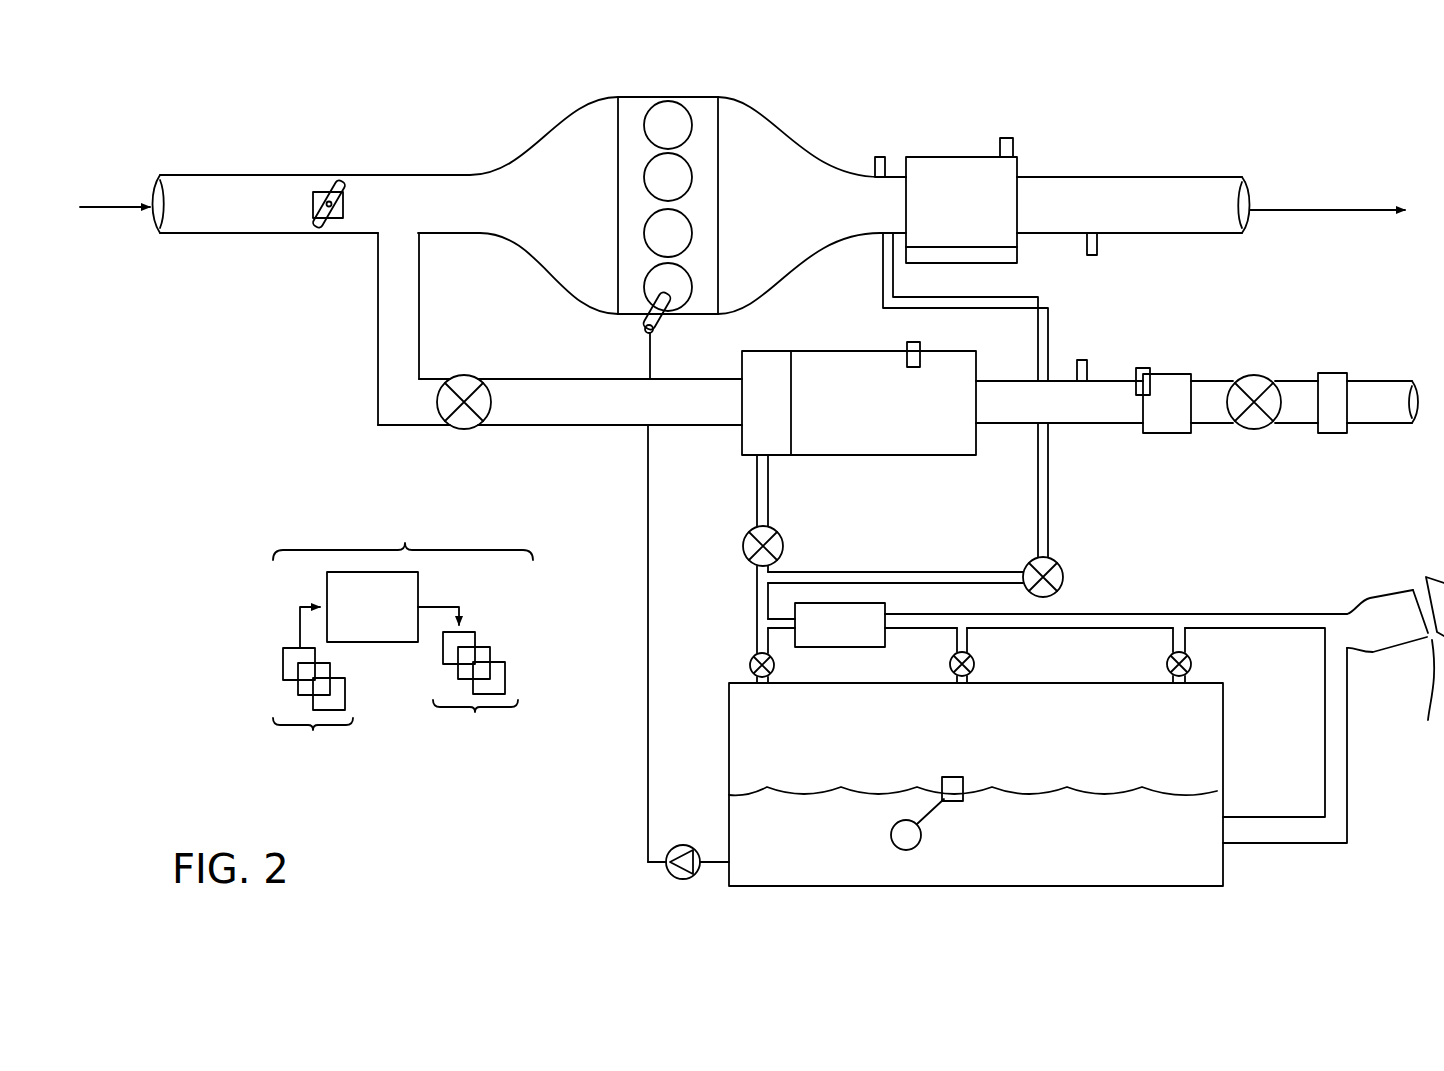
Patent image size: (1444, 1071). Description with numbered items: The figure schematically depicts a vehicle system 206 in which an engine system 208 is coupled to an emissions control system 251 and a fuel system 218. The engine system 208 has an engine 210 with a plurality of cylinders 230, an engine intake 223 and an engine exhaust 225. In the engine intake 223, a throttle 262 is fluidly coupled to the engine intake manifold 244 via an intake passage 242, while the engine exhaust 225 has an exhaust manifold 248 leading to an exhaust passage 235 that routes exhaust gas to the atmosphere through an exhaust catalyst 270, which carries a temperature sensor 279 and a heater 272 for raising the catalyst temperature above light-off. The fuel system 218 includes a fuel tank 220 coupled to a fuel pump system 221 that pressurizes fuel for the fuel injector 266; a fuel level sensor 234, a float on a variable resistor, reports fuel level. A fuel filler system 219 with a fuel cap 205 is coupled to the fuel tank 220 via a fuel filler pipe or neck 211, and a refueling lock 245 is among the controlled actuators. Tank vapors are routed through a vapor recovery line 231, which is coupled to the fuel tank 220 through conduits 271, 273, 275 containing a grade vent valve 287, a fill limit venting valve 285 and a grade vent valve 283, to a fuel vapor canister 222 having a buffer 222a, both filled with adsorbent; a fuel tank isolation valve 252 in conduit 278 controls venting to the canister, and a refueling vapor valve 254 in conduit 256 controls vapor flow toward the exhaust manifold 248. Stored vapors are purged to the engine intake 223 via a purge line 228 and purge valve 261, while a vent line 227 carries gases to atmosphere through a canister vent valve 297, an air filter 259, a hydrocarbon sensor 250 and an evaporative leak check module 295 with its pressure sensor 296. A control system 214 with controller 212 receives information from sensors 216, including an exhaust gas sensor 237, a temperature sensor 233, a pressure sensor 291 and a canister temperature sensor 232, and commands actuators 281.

The fuel cap 205 is at (1443, 580).
The vehicle system 206 is at (178, 100).
The engine system 208 is at (1028, 97).
The engine 210 is at (718, 192).
The fuel filler pipe or neck 211 is at (1350, 730).
The controller 212 is at (379, 610).
The control system 214 is at (403, 528).
The sensors 216 is at (313, 711).
The fuel system 218 is at (1365, 805).
The fuel filler system 219 is at (1400, 572).
The fuel tank 220 is at (1225, 793).
The fuel pump system 221 is at (688, 848).
The fuel vapor canister 222 is at (975, 371).
The buffer 222a is at (768, 351).
The engine intake 223 is at (383, 107).
The engine exhaust 225 is at (907, 82).
The vent line 227 is at (1197, 402).
The purge line 228 is at (560, 620).
The cylinders 230 is at (688, 118).
The vapor recovery line 231 is at (1243, 613).
The canister temperature sensor 232 is at (912, 342).
The temperature sensor 233 is at (1085, 248).
The fuel level sensor 234 is at (955, 777).
The exhaust passage 235 is at (1195, 177).
The exhaust gas sensor 237 is at (878, 166).
The intake passage 242 is at (378, 237).
The engine intake manifold 244 is at (580, 205).
The refueling lock 245 is at (1428, 720).
The exhaust manifold 248 is at (812, 205).
The hydrocarbon sensor 250 is at (1082, 360).
The emissions control system 251 is at (1398, 330).
The fuel tank isolation valve 252 is at (750, 560).
The refueling vapor valve 254 is at (1028, 566).
The conduit 256 is at (935, 572).
The air filter 259 is at (1340, 373).
The purge valve 261 is at (470, 380).
The throttle 262 is at (343, 220).
The fuel injector 266 is at (660, 312).
The exhaust catalyst 270 is at (945, 157).
The conduit 271 is at (772, 645).
The heater 272 is at (965, 263).
The conduit 273 is at (957, 640).
The conduit 275 is at (1172, 640).
The conduit 278 is at (753, 490).
The temperature sensor 279 is at (1012, 140).
The actuators 281 is at (478, 694).
The grade vent valve 283 is at (1192, 665).
The fill limit venting valve 285 is at (975, 666).
The grade vent valve 287 is at (745, 660).
The pressure sensor 291 is at (888, 618).
The evaporative leak check module 295 is at (1166, 374).
The pressure sensor 296 is at (1140, 368).
The canister vent valve 297 is at (1257, 376).